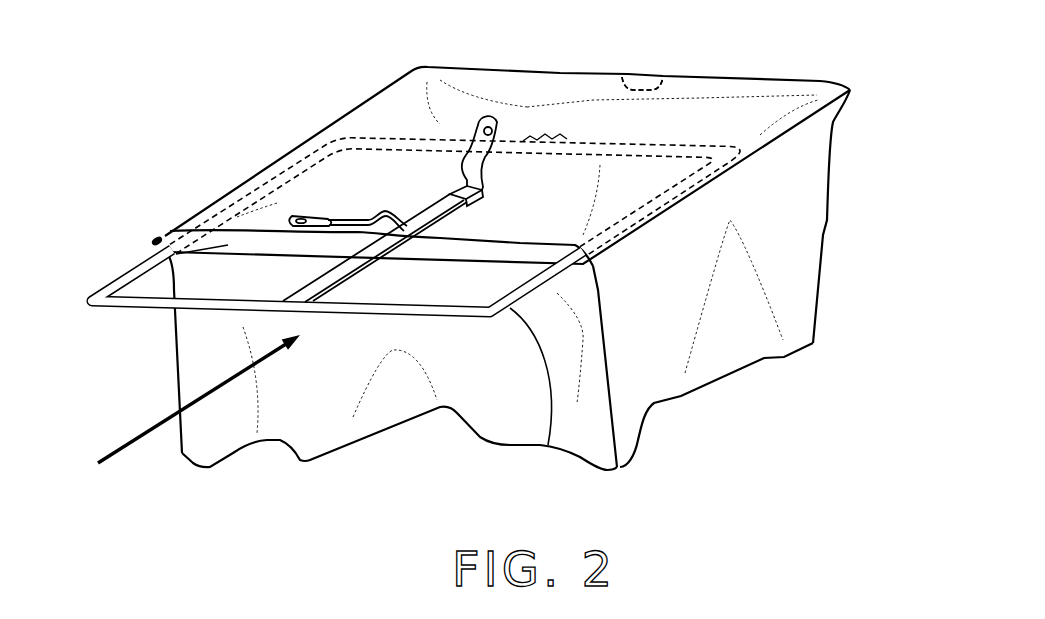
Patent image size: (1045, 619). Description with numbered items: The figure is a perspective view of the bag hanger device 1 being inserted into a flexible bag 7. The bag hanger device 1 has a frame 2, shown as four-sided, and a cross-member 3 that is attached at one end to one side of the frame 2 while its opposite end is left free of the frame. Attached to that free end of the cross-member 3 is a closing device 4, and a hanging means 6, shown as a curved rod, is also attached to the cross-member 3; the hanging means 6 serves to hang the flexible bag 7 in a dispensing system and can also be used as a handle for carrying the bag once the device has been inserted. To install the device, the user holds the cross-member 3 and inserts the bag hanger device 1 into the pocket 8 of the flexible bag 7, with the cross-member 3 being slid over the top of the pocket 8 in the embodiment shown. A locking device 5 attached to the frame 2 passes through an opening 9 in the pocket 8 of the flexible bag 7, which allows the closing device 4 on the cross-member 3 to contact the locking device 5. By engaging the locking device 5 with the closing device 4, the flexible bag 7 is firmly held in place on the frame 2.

The bag hanger device 1 is at (100, 322).
The frame 2 is at (548, 445).
The cross-member 3 is at (337, 278).
The closing device 4 is at (448, 122).
The locking device 5 is at (553, 133).
The hanging means 6 is at (325, 223).
The flexible bag 7 is at (823, 233).
The pocket 8 is at (155, 240).
The opening 9 is at (650, 82).